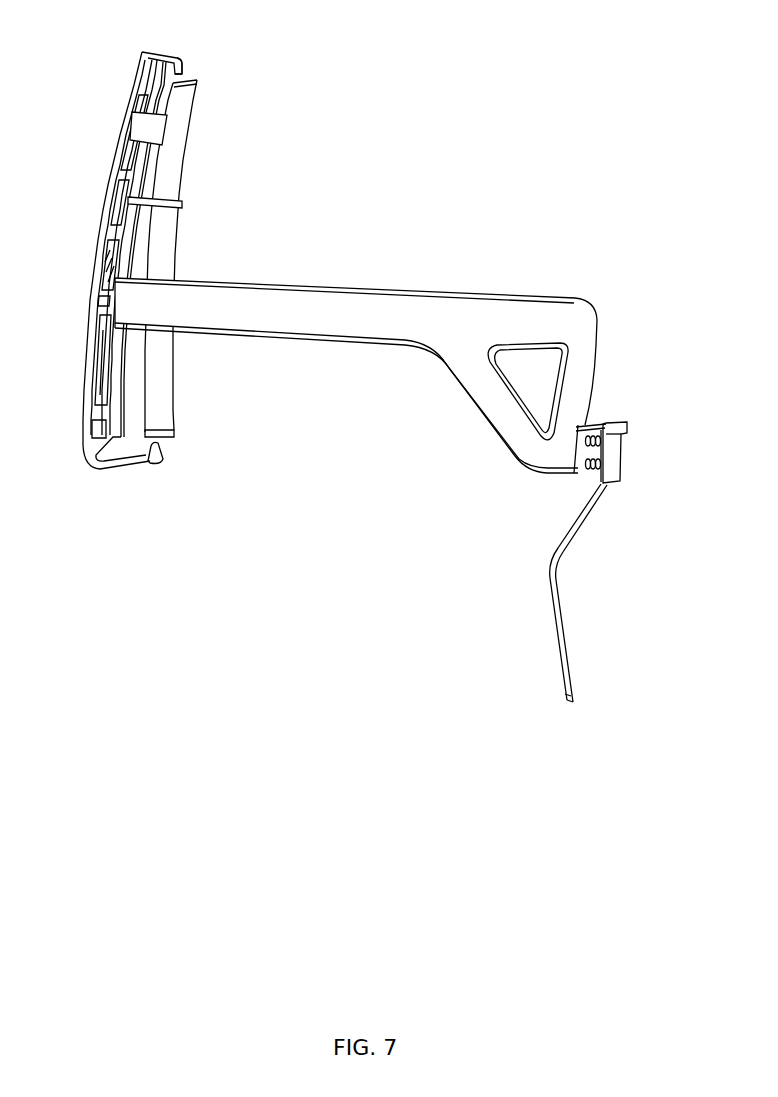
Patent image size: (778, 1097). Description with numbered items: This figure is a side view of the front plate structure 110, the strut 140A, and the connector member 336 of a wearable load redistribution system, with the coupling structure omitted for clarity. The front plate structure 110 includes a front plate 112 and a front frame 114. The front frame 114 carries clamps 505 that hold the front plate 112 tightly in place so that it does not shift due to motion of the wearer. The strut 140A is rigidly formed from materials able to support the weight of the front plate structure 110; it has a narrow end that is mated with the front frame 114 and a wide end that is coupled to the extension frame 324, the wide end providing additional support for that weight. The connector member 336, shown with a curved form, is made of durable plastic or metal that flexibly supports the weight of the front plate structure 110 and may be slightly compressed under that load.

The front plate structure 110 is at (142, 242).
The front plate 112 is at (138, 241).
The front frame 114 is at (98, 318).
The clamps 505 is at (181, 63).
The strut 140A is at (445, 318).
The extension frame 324 is at (620, 452).
The connector member 336 is at (563, 631).